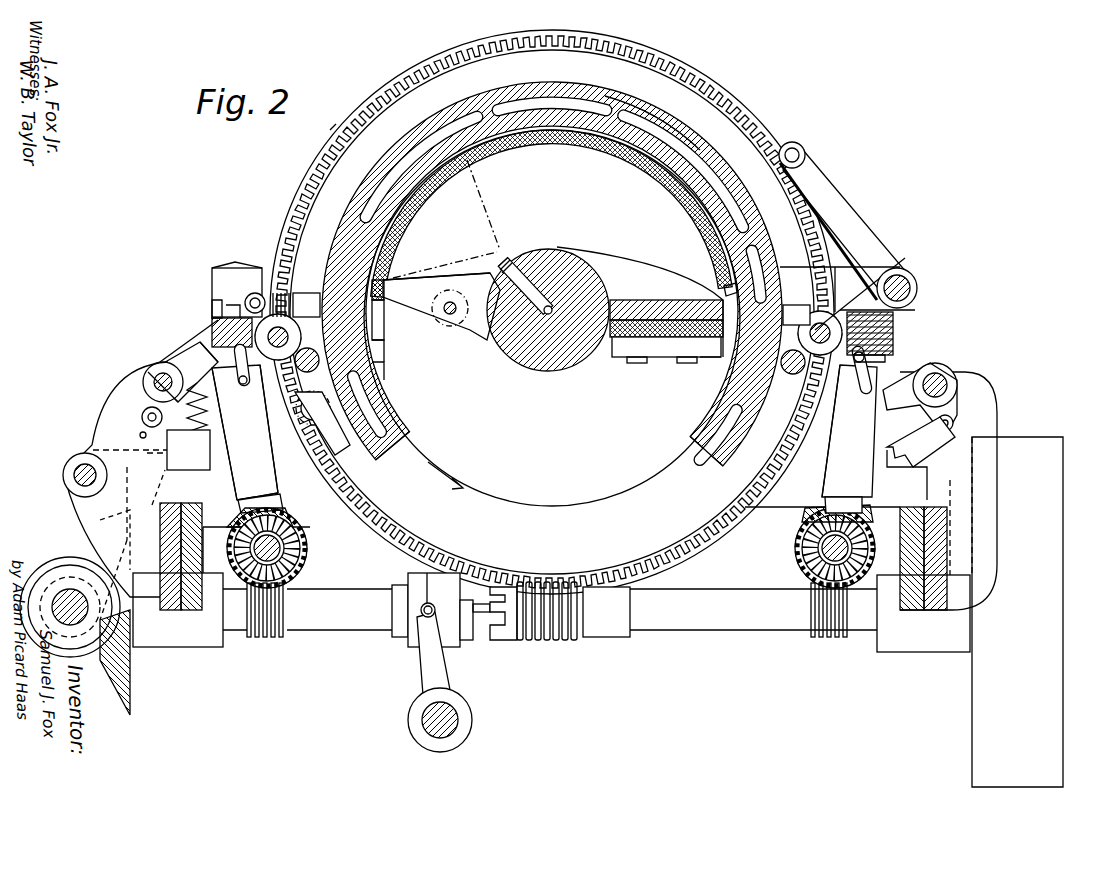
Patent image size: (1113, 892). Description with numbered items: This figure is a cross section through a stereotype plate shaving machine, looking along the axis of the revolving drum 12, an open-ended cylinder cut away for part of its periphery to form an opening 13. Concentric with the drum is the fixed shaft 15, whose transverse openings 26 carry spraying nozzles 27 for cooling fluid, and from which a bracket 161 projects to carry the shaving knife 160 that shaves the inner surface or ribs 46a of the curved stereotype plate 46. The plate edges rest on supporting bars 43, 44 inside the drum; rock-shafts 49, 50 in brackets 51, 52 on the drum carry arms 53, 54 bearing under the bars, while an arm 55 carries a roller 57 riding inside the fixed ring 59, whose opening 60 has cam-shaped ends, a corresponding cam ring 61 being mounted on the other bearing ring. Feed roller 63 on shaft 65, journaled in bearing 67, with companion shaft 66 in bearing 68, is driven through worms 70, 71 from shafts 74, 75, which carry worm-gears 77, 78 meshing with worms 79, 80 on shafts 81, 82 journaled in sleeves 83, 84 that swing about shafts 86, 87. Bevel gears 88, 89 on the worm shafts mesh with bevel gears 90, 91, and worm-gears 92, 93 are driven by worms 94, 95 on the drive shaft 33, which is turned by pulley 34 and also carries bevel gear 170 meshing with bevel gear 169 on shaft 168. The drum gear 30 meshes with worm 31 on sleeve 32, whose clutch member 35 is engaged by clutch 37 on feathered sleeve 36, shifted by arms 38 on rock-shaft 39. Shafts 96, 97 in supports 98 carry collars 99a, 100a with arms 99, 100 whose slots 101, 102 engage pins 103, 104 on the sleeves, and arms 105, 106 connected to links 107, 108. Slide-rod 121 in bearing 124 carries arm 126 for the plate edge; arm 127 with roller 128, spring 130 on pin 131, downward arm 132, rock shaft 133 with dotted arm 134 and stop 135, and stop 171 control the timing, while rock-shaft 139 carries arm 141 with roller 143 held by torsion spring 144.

The drum 12 is at (555, 140).
The opening 13 is at (571, 496).
The fixed shaft 15 is at (536, 360).
The transverse openings 26 is at (532, 280).
The spraying nozzles 27 is at (508, 262).
The gear 30 is at (312, 158).
The worm 31 is at (555, 640).
The sleeve 32 is at (618, 637).
The drive shaft 33 is at (697, 600).
The pulley 34 is at (1050, 590).
The clutch member 35 is at (505, 640).
The sleeve 36 is at (400, 585).
The clutch 37 is at (466, 640).
The shifting arms 38 is at (420, 656).
The rock-shaft 39 is at (420, 721).
The supporting bar 43 is at (385, 336).
The supporting bar 44 is at (762, 262).
The curved stereotype plate 46 is at (570, 128).
The ribs 46a is at (664, 188).
The rock-shaft 49 is at (373, 377).
The rock-shaft 50 is at (700, 400).
The bracket 51 is at (382, 456).
The bracket 52 is at (716, 400).
The arm 53 is at (373, 362).
The arm 54 is at (718, 390).
The arm 55 is at (275, 405).
The roller 57 is at (340, 455).
The ring 59 is at (330, 134).
The opening 60 is at (300, 430).
The cam ring 61 is at (726, 300).
The roller 63 is at (386, 285).
The shaft 65 is at (335, 300).
The shaft 66 is at (782, 287).
The bearing 67 is at (300, 298).
The bearing 68 is at (797, 305).
The worm 70 is at (286, 316).
The worm 71 is at (896, 266).
The shaft 74 is at (252, 298).
The shaft 75 is at (838, 440).
The worm-gear 77 is at (212, 328).
The worm-gear 78 is at (735, 460).
The worm 79 is at (215, 302).
The worm 80 is at (893, 340).
The shaft 81 is at (227, 316).
The shaft 82 is at (915, 310).
The sleeve 83 is at (280, 490).
The sleeve 84 is at (836, 455).
The shaft 86 is at (302, 535).
The shaft 87 is at (815, 508).
The bevel gear 88 is at (240, 505).
The bevel gear 89 is at (870, 515).
The bevel gear 90 is at (333, 550).
The bevel gear 91 is at (806, 545).
The worm-gear 92 is at (300, 560).
The worm-gear 93 is at (802, 565).
The worm 94 is at (268, 640).
The worm 95 is at (836, 640).
The shaft 96 is at (158, 372).
The shaft 97 is at (958, 390).
The support 98 is at (113, 420).
The arm 99 is at (205, 343).
The collar 99a is at (157, 367).
The arm 100 is at (905, 380).
The collar 100a is at (958, 376).
The slot 101 is at (208, 420).
The slot 102 is at (888, 359).
The pin 103 is at (245, 386).
The pin 104 is at (862, 394).
The arm 105 is at (150, 413).
The arm 106 is at (954, 420).
The link 107 is at (228, 445).
The link 108 is at (920, 442).
The slide-rod 121 is at (449, 300).
The bearing 124 is at (478, 285).
The arm 126 is at (445, 270).
The arm 127 is at (200, 333).
The roller 128 is at (250, 266).
The spring 130 is at (150, 372).
The pin 131 is at (232, 460).
The arm 132 is at (185, 470).
The rock shaft 133 is at (80, 462).
The arm 134 is at (162, 496).
The stop 135 is at (160, 478).
The rock-shaft 139 is at (909, 277).
The arm 141 is at (840, 200).
The roller 143 is at (805, 152).
The torsion spring 144 is at (883, 238).
The shaving knife 160 is at (670, 345).
The bracket 161 is at (642, 270).
The shaft 168 is at (64, 598).
The bevel gear 169 is at (78, 562).
The bevel gear 170 is at (116, 706).
The stop 171 is at (140, 434).